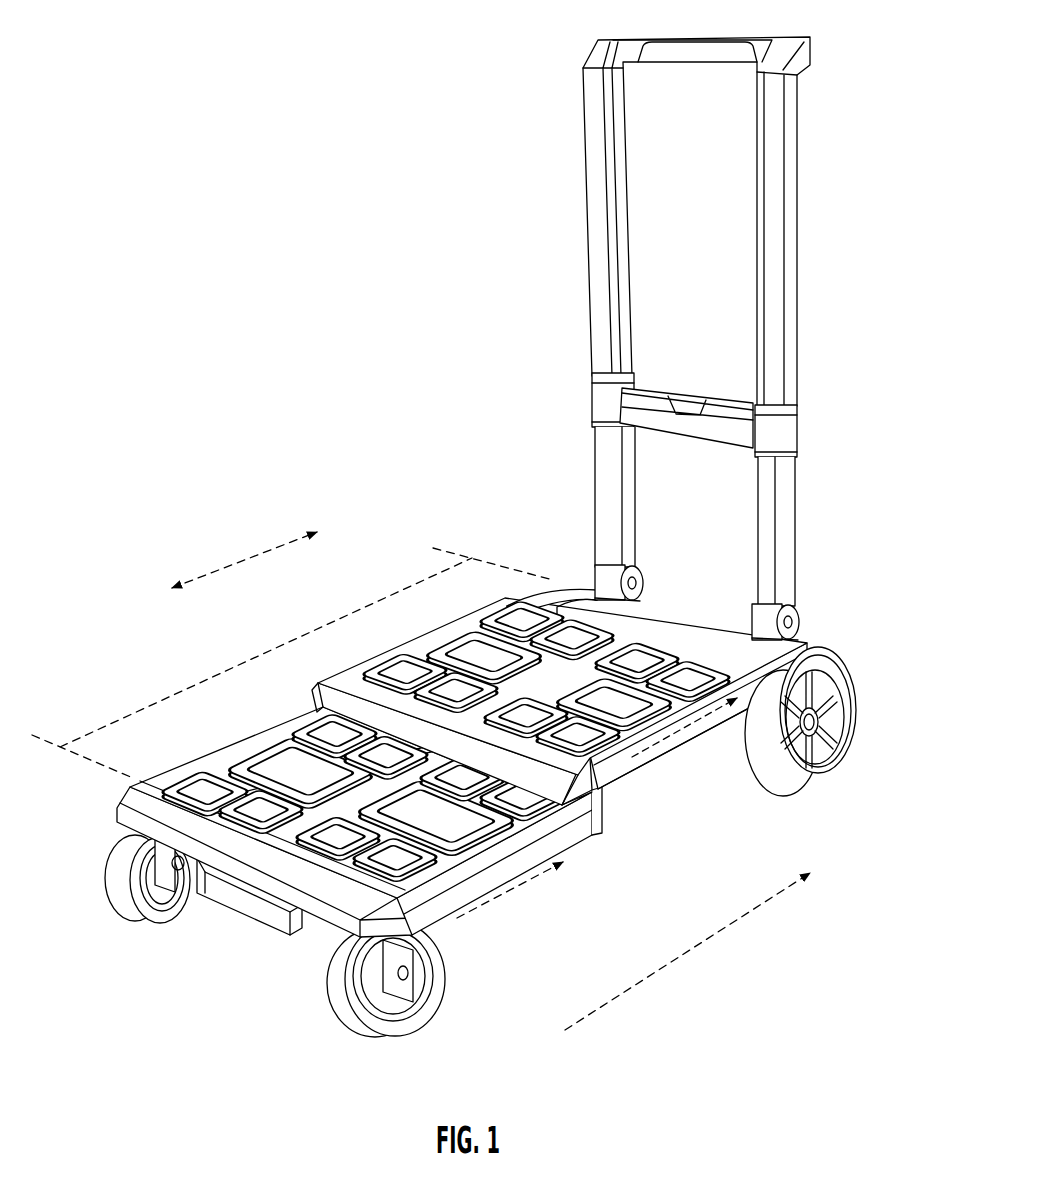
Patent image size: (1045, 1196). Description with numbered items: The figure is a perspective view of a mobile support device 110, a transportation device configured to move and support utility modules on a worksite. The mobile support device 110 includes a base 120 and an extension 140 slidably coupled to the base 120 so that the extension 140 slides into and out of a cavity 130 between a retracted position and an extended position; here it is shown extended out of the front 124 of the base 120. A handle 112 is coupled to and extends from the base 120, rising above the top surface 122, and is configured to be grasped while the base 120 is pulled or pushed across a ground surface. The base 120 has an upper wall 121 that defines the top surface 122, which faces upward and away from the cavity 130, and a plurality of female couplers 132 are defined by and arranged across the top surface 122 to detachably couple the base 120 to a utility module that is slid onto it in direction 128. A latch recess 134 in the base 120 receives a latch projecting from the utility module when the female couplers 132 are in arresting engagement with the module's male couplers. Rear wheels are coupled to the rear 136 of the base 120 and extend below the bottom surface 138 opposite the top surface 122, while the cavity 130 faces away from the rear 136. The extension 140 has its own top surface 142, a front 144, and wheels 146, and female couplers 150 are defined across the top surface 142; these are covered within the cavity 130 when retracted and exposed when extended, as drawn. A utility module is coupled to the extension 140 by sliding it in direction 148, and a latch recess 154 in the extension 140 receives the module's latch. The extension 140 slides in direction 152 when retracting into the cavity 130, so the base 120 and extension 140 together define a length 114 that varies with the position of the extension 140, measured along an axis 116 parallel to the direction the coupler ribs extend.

The mobile support device 110 is at (485, 540).
The handle 112 is at (732, 321).
The length 114 is at (404, 576).
The axis 116 is at (234, 546).
The base 120 is at (744, 600).
The upper wall 121 is at (752, 607).
The top surface 122 is at (562, 647).
The front 124 is at (430, 728).
The direction 128 is at (698, 741).
The cavity 130 is at (517, 861).
The female couplers 132 is at (552, 651).
The latch recess 134 is at (456, 650).
The rear 136 is at (813, 680).
The bottom surface 138 is at (702, 780).
The extension 140 is at (252, 938).
The top surface 142 is at (361, 802).
The front 144 is at (259, 921).
The wheels 146 is at (273, 931).
The direction 148 is at (510, 908).
The female couplers 150 is at (363, 833).
The direction 152 is at (687, 951).
The latch recess 154 is at (231, 858).